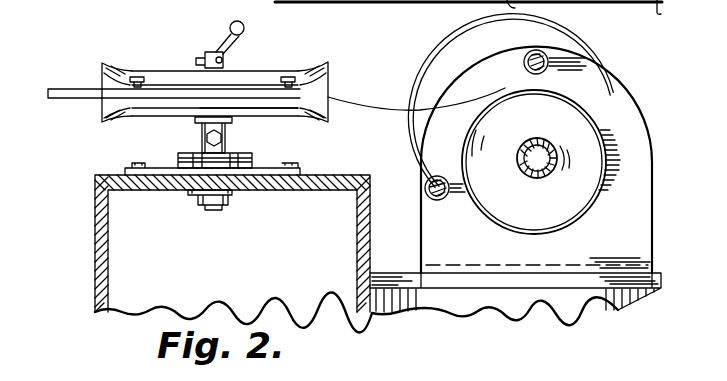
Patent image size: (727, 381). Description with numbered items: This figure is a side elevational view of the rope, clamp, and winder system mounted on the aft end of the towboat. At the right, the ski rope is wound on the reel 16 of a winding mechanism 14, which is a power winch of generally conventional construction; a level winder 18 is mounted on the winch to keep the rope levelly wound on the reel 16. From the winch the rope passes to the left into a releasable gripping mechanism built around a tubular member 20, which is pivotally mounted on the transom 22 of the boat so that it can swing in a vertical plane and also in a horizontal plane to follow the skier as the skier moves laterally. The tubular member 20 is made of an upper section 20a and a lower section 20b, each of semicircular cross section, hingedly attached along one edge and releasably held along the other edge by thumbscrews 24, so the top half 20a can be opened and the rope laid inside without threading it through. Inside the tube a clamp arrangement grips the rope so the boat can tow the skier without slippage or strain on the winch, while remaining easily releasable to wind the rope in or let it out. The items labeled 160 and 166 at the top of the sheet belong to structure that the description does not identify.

The winding mechanism 14 is at (627, 91).
The reel 16 is at (530, 168).
The level winder 18 is at (493, 72).
The tubular member 20 is at (254, 71).
The upper section 20a is at (352, 66).
The lower section 20b is at (296, 108).
The transom 22 is at (340, 176).
The thumbscrews 24 is at (137, 77).
The bracket 160 is at (684, 18).
The member 166 is at (532, 15).